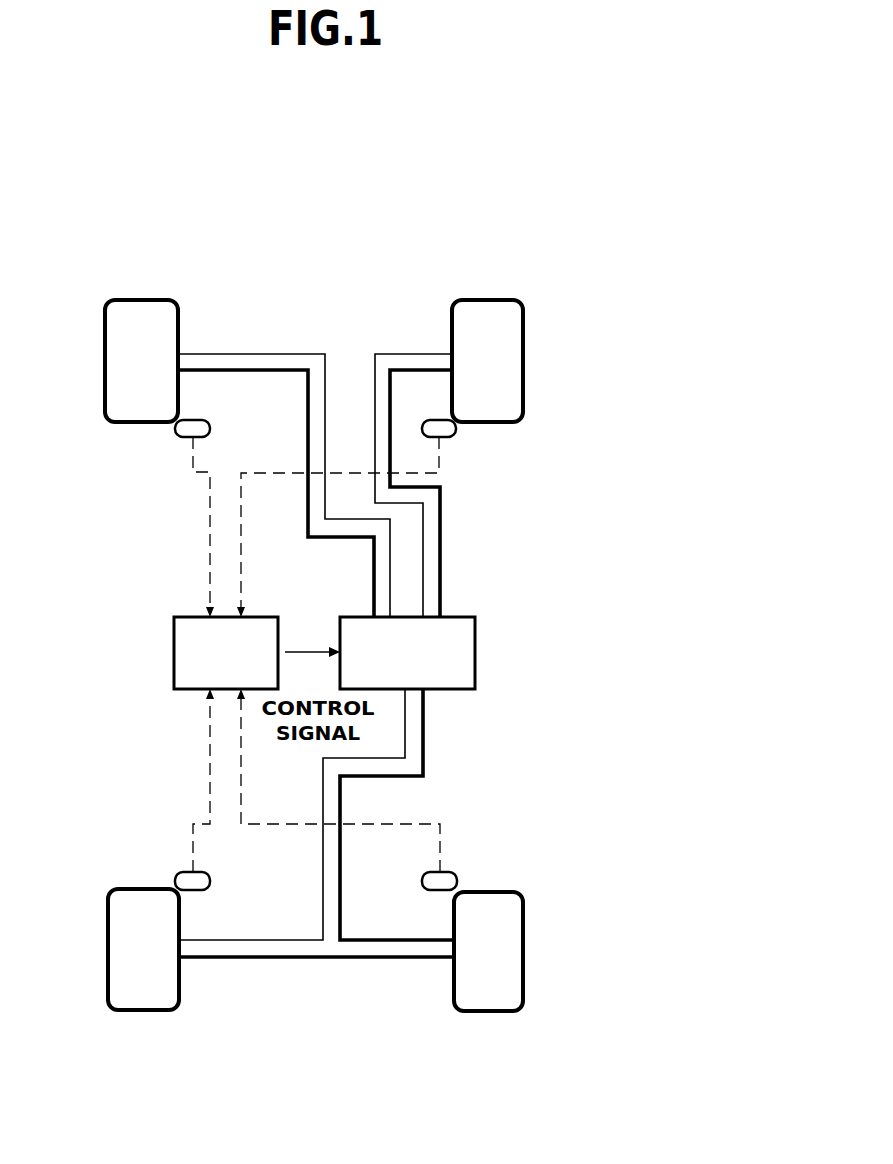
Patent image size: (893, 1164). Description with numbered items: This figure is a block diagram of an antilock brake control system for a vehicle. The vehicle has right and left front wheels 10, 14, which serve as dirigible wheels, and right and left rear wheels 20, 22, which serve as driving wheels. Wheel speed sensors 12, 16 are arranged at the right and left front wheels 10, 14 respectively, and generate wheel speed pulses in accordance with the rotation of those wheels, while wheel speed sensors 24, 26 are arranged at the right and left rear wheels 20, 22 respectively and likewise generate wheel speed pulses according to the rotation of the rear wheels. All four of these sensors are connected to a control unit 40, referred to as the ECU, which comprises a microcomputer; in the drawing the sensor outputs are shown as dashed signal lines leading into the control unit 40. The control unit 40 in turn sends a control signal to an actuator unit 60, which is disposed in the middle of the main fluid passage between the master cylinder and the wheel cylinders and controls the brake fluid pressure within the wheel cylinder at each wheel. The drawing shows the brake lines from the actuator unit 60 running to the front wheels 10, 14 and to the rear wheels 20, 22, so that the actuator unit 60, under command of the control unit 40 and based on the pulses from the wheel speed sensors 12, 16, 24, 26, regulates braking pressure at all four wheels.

The right front wheel 10 is at (523, 313).
The wheel speed sensor 12 is at (456, 431).
The left front wheel 14 is at (105, 325).
The wheel speed sensor 16 is at (175, 432).
The right rear wheel 20 is at (493, 1000).
The left rear wheel 22 is at (123, 998).
The wheel speed sensor 24 is at (455, 878).
The wheel speed sensor 26 is at (175, 880).
The control unit 40 is at (174, 632).
The actuator unit 60 is at (475, 632).